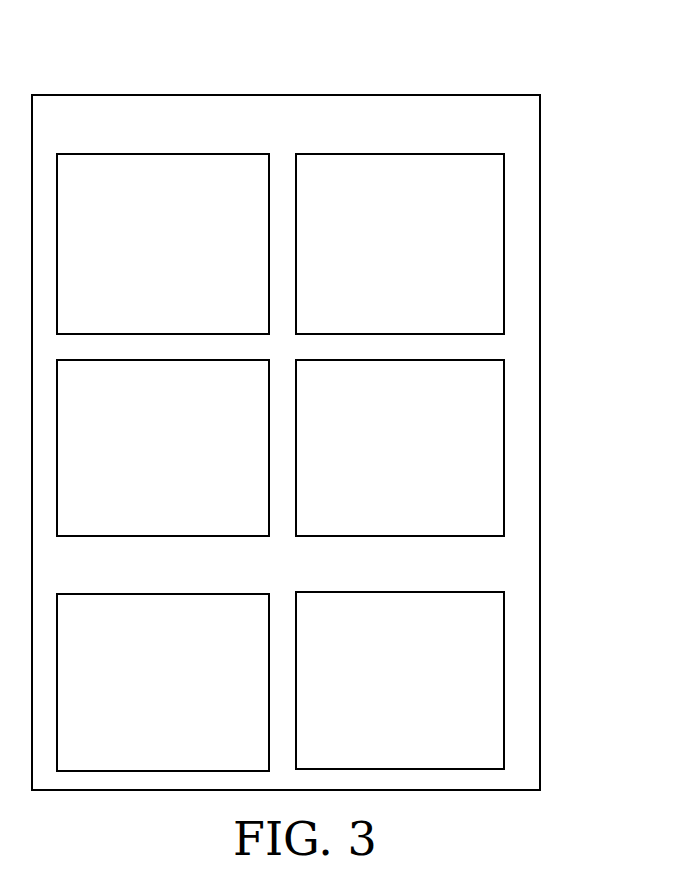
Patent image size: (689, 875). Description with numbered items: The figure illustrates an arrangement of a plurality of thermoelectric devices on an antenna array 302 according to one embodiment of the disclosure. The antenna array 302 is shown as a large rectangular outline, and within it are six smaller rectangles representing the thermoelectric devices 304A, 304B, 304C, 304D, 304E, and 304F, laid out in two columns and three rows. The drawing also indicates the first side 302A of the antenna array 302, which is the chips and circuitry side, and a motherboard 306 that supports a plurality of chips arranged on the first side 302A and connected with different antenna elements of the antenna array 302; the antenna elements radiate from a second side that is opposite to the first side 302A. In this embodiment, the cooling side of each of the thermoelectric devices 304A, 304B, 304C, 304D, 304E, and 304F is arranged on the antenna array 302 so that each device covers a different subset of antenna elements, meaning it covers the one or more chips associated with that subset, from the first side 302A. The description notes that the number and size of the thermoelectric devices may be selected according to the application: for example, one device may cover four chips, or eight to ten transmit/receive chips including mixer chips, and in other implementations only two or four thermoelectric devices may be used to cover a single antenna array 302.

The antenna array 302 is at (462, 95).
The first side 302A is at (527, 287).
The motherboard 306 is at (527, 538).
The thermoelectric device 304A is at (163, 244).
The thermoelectric device 304B is at (400, 244).
The thermoelectric device 304C is at (163, 448).
The thermoelectric device 304D is at (400, 448).
The thermoelectric device 304E is at (163, 682).
The thermoelectric device 304F is at (400, 680).